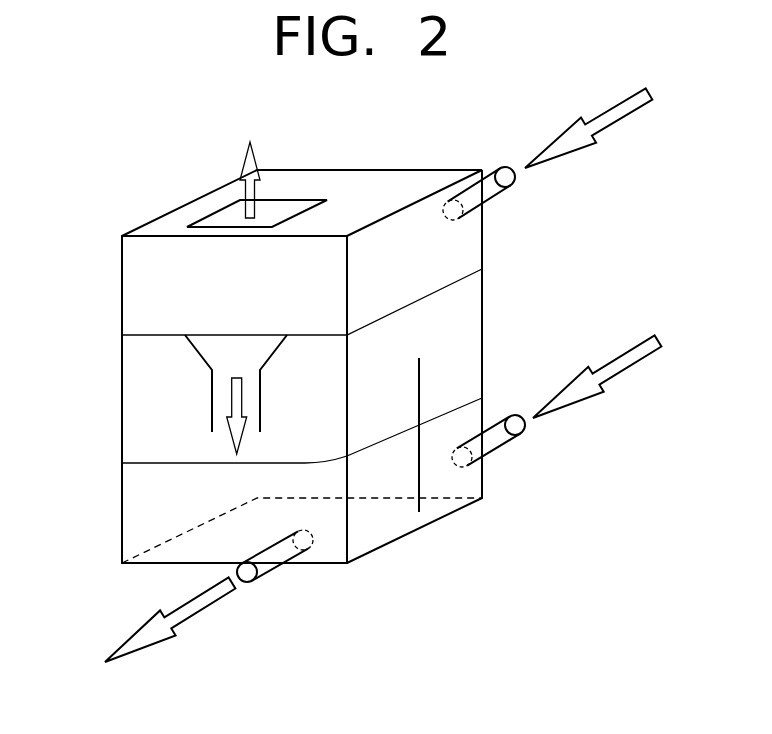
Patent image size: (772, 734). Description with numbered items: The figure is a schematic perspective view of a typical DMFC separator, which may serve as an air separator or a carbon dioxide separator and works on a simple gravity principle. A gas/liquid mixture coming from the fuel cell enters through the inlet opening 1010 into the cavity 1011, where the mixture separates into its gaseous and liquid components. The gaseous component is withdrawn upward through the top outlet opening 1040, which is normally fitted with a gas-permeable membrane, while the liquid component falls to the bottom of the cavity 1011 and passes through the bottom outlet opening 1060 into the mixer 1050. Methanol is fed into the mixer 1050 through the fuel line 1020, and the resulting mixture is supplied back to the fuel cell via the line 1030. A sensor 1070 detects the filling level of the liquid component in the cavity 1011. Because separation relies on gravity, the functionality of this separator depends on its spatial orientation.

The inlet opening 1010 is at (500, 195).
The cavity 1011 is at (465, 250).
The fuel line 1020 is at (503, 442).
The line 1030 is at (252, 577).
The top outlet opening 1040 is at (225, 218).
The mixer 1050 is at (380, 473).
The bottom outlet opening 1060 is at (232, 428).
The sensor 1070 is at (420, 388).